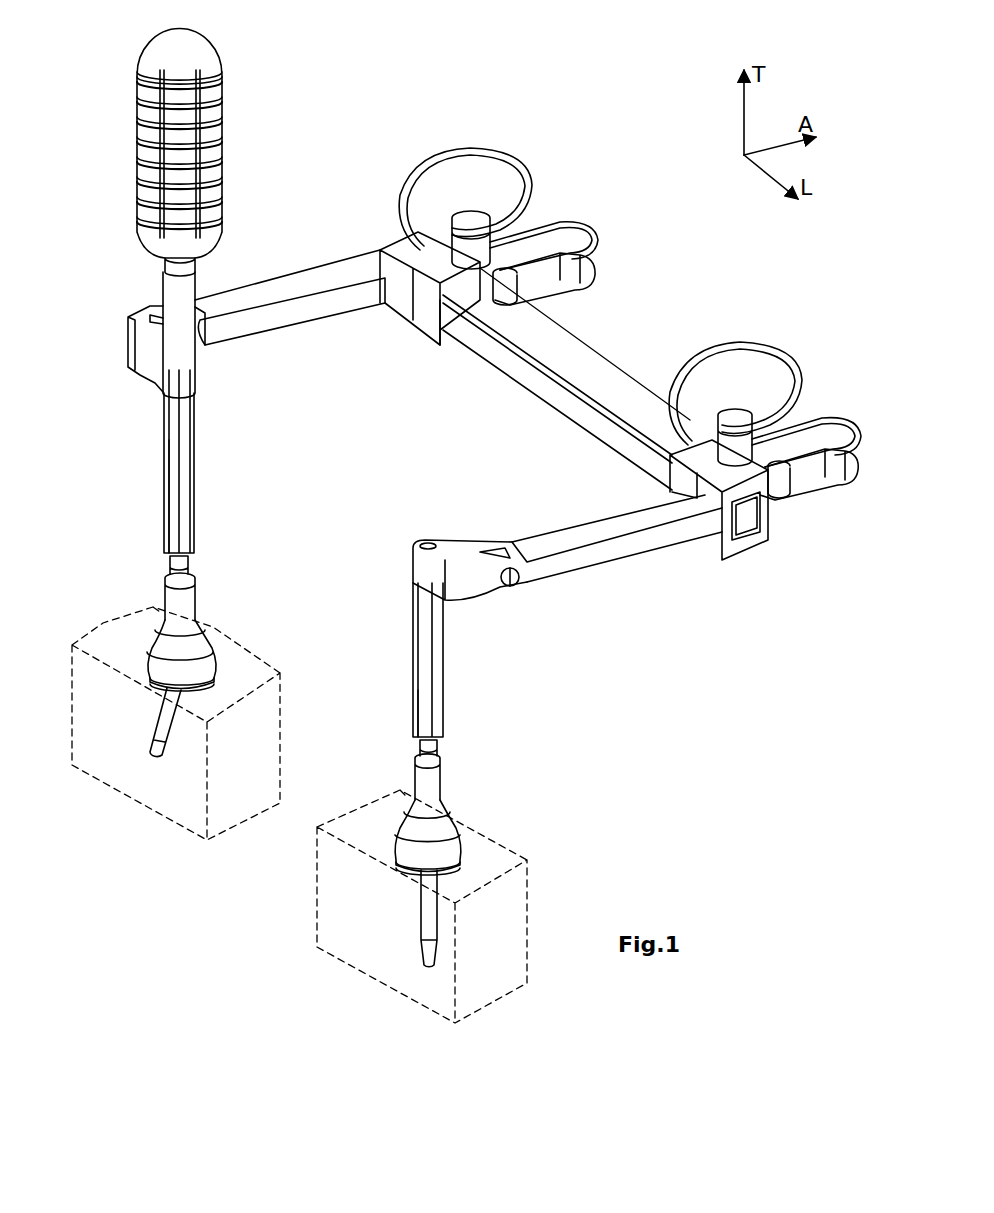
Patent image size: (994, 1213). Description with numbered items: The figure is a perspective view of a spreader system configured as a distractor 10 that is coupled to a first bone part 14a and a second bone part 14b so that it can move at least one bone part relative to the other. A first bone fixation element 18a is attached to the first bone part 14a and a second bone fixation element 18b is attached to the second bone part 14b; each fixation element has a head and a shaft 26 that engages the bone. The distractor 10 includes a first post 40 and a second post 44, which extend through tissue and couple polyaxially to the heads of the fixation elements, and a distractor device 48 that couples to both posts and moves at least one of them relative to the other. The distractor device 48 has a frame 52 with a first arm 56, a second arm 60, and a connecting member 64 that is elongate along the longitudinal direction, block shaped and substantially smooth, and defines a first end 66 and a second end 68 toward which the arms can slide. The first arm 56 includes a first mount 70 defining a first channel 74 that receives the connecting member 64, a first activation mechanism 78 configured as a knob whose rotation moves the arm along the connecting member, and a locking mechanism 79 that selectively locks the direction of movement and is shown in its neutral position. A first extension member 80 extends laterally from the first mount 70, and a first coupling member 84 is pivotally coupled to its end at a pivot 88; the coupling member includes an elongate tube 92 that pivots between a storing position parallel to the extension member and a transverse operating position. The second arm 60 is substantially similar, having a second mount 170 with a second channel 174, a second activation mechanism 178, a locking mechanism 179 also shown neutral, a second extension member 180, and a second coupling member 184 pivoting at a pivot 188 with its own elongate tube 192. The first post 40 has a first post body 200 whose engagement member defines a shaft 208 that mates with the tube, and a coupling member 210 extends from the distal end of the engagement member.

The distractor 10 is at (387, 143).
The first bone part 14a is at (107, 752).
The second bone part 14b is at (487, 968).
The first bone fixation element 18a is at (158, 757).
The second bone fixation element 18b is at (417, 910).
The shaft 26 is at (162, 720).
The first post 40 is at (162, 583).
The second post 44 is at (442, 790).
The distractor device 48 is at (306, 266).
The frame 52 is at (575, 362).
The first arm 56 is at (262, 297).
The second arm 60 is at (628, 555).
The connecting member 64 is at (530, 372).
The first end 66 is at (397, 243).
The second end 68 is at (745, 527).
The first mount 70 is at (420, 300).
The first channel 74 is at (440, 332).
The first activation mechanism 78 is at (493, 183).
The locking mechanism 79 is at (597, 232).
The first extension member 80 is at (276, 318).
The first coupling member 84 is at (193, 453).
The pivot 88 is at (125, 326).
The elongate tube 92 is at (185, 520).
The second mount 170 is at (720, 520).
The second channel 174 is at (775, 523).
The second activation mechanism 178 is at (752, 378).
The locking mechanism 179 is at (851, 437).
The second extension member 180 is at (557, 548).
The second coupling member 184 is at (440, 653).
The pivot 188 is at (520, 580).
The elongate tube 192 is at (413, 690).
The first post body 200 is at (160, 640).
The shaft 208 is at (185, 568).
The coupling member 210 is at (200, 665).